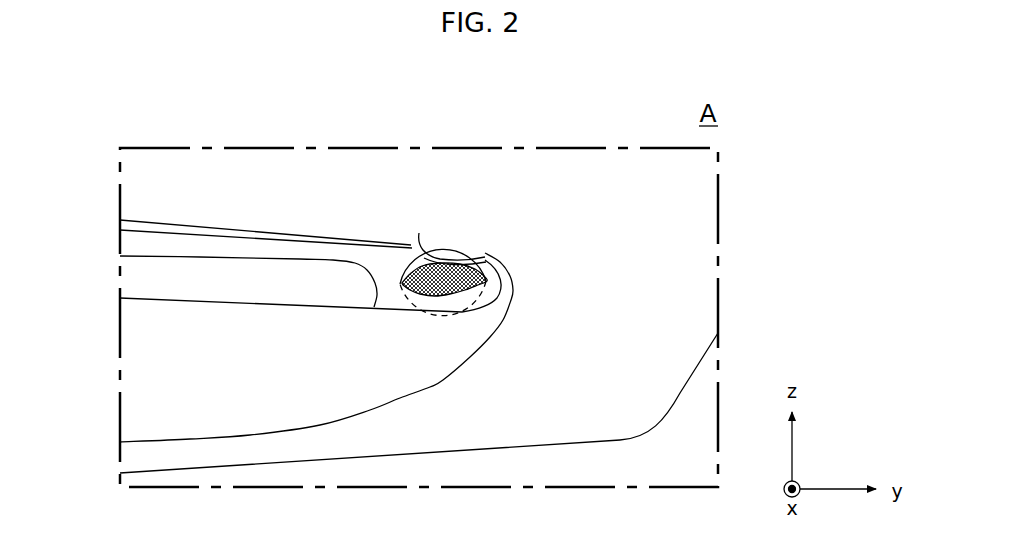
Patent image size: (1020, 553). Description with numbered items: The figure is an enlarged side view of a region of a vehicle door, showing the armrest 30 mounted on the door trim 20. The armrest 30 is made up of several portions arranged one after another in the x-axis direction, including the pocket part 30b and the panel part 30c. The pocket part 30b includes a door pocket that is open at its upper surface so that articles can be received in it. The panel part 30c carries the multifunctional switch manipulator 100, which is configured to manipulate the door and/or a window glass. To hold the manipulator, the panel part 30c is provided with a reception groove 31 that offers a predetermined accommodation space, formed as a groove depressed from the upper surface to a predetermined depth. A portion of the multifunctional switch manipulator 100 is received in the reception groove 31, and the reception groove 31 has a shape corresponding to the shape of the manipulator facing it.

The door trim 20 is at (667, 261).
The armrest 30 is at (148, 378).
The pocket part 30b is at (157, 277).
The panel part 30c is at (393, 256).
The reception groove 31 is at (473, 310).
The multifunctional switch manipulator 100 is at (478, 242).